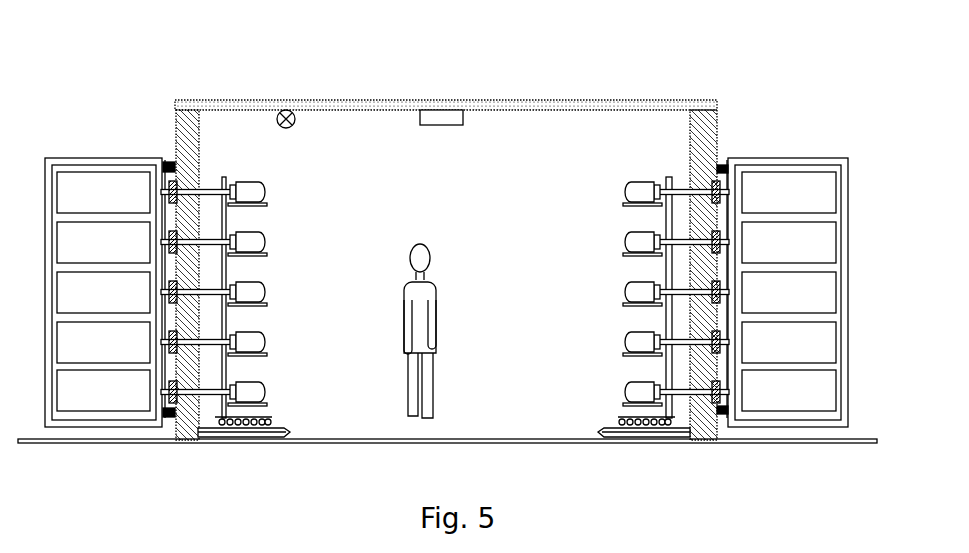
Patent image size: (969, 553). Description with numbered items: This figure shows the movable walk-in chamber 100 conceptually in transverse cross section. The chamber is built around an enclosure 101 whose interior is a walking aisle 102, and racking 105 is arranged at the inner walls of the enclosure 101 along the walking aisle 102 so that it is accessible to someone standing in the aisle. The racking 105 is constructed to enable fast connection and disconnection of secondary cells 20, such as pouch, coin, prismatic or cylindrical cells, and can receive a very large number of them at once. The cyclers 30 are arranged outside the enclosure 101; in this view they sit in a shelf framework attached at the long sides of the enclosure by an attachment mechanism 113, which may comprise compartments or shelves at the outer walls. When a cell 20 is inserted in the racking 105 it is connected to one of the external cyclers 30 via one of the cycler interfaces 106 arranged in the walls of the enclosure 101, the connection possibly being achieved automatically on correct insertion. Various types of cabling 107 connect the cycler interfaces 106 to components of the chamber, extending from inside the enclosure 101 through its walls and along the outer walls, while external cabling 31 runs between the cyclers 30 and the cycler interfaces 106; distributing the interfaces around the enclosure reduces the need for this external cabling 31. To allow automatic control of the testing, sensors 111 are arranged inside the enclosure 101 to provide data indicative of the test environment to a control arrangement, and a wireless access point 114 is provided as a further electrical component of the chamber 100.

The movable walk-in chamber 100 is at (633, 85).
The enclosure 101 is at (466, 331).
The walking aisle 102 is at (463, 427).
The racking 105 is at (669, 408).
The cycler interfaces 106 is at (723, 183).
The cabling 107 is at (199, 188).
The sensors 111 is at (296, 133).
The attachment mechanism 113 is at (168, 158).
The wireless access point 114 is at (466, 128).
The cells 20 is at (628, 180).
The cyclers 30 is at (446, 291).
The external cabling 31 is at (158, 186).